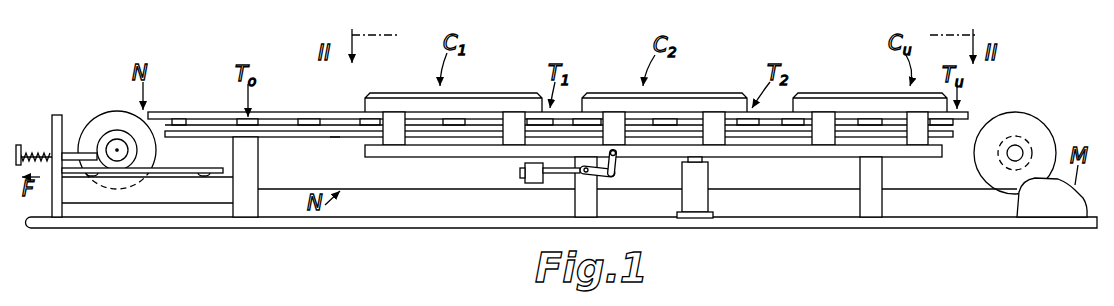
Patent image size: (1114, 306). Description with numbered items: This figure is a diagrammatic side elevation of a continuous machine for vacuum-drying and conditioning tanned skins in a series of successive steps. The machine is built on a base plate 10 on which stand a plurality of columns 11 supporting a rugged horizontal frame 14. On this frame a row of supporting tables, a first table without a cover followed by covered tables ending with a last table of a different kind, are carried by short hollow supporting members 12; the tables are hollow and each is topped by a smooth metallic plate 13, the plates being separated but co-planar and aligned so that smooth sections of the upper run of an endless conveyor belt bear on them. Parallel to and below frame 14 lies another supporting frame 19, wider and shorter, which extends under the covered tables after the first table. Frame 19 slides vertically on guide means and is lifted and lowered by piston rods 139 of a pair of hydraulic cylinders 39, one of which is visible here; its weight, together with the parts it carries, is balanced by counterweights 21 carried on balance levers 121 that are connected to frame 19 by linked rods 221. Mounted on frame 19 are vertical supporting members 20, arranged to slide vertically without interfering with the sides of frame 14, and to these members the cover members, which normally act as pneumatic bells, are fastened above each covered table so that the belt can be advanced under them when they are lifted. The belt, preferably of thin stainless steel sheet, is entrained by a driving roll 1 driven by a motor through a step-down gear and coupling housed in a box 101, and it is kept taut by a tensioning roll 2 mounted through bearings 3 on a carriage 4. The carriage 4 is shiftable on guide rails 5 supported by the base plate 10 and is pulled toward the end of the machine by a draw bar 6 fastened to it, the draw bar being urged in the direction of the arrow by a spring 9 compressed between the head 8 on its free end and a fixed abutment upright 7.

The driving roll 1 is at (1040, 122).
The tensioning roll 2 is at (90, 118).
The bearings 3 is at (112, 132).
The carriage 4 is at (215, 150).
The guide rails 5 is at (170, 176).
The draw bar 6 is at (70, 148).
The fixed abutment upright 7 is at (53, 205).
The head 8 is at (18, 144).
The spring 9 is at (40, 152).
The base plate 10 is at (362, 229).
The columns 11 is at (258, 158).
The short hollow supporting members 12 is at (310, 119).
The smooth metallic plate 13 is at (198, 111).
The horizontal frame 14 is at (330, 137).
The supporting frame 19 is at (437, 158).
The vertical supporting members 20 is at (395, 121).
The counterweights 21 is at (522, 174).
The hydraulic cylinders 39 is at (705, 200).
The box 101 is at (1010, 176).
The balance levers 121 is at (604, 172).
The piston rods 139 is at (703, 159).
The linked rods 221 is at (620, 158).